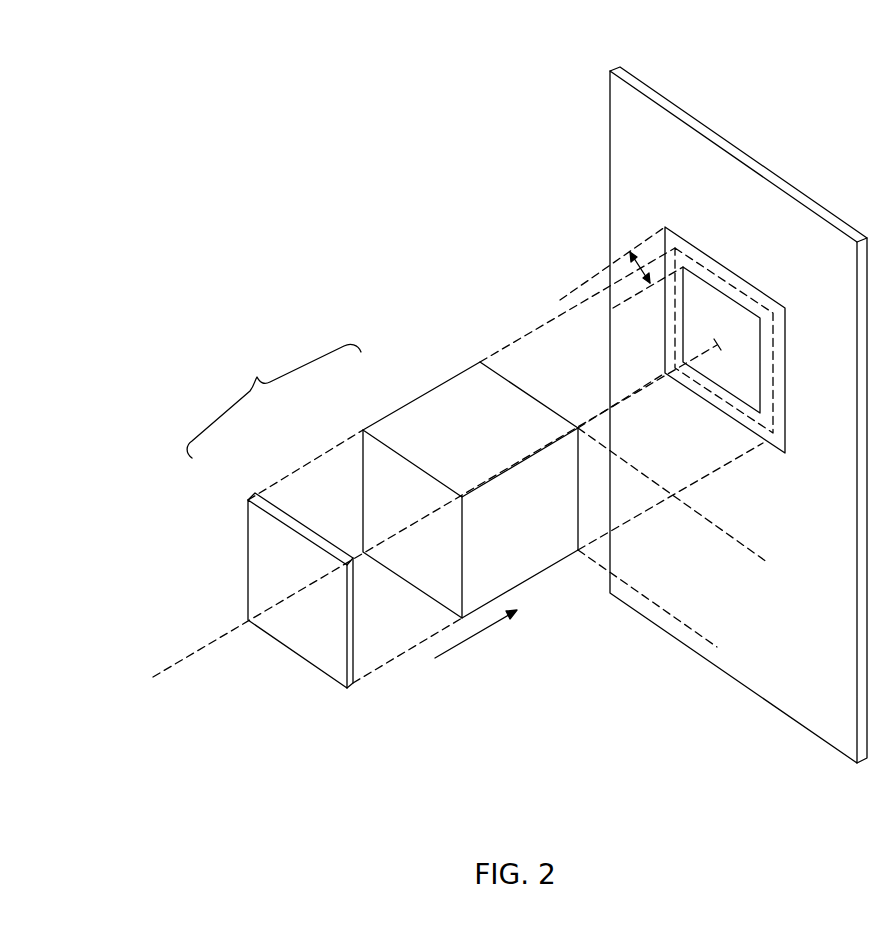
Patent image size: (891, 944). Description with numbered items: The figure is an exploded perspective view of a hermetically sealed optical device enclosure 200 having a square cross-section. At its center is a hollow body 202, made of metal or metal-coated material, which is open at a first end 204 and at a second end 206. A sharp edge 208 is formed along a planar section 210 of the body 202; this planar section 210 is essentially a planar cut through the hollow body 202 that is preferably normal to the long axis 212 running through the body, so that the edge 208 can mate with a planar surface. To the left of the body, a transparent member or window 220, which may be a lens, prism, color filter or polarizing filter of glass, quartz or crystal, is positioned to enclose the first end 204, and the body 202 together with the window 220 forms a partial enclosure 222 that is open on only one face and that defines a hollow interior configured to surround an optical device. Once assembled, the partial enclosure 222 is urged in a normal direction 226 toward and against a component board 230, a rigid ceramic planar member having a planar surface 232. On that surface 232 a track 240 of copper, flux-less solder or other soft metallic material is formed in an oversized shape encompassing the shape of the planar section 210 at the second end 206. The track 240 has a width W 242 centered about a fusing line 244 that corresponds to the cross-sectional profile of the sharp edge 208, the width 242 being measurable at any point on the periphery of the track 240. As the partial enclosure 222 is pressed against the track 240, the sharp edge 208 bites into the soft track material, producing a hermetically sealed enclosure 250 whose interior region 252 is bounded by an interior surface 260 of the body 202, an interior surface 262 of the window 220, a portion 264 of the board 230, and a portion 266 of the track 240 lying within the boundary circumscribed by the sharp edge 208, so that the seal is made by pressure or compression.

The hermetically sealed optical device enclosure 200 is at (563, 703).
The hollow body 202 is at (418, 397).
The first end 204 is at (381, 482).
The second end 206 is at (551, 405).
The sharp edge 208 is at (512, 380).
The planar section 210 is at (590, 560).
The long axis 212 is at (192, 659).
The window 220 is at (268, 566).
The partial enclosure 222 is at (274, 401).
The normal direction 226 is at (473, 639).
The component board 230 is at (740, 685).
The planar surface 232 is at (645, 146).
The track 240 is at (712, 258).
The width W 242 is at (637, 252).
The fusing line 244 is at (780, 454).
The hermetically sealed enclosure 250 is at (468, 264).
The interior region 252 is at (417, 481).
The interior surface of body 260 is at (451, 590).
The interior surface of window 262 is at (362, 637).
The portion of board 264 is at (738, 323).
The portion of track 266 is at (779, 417).